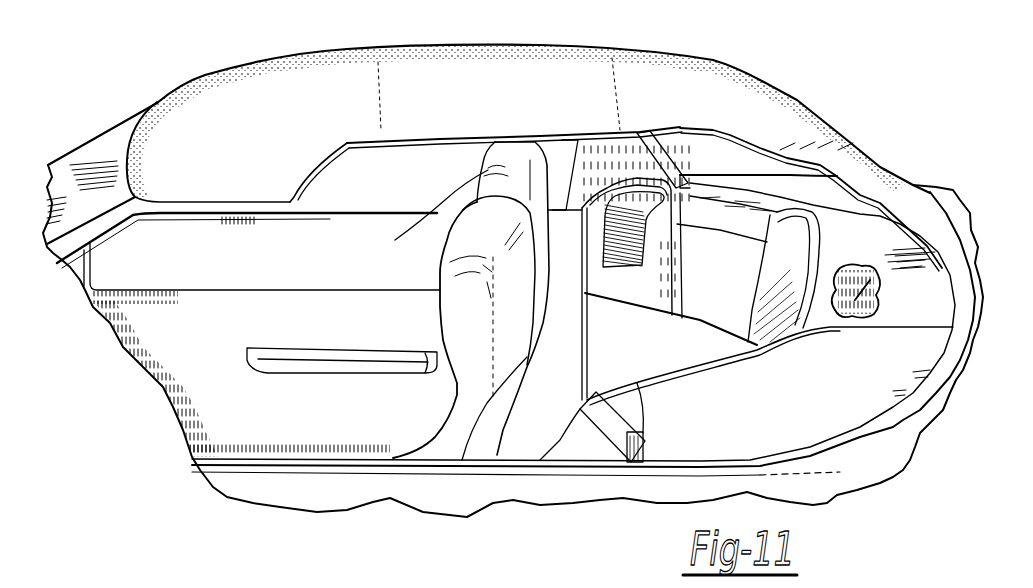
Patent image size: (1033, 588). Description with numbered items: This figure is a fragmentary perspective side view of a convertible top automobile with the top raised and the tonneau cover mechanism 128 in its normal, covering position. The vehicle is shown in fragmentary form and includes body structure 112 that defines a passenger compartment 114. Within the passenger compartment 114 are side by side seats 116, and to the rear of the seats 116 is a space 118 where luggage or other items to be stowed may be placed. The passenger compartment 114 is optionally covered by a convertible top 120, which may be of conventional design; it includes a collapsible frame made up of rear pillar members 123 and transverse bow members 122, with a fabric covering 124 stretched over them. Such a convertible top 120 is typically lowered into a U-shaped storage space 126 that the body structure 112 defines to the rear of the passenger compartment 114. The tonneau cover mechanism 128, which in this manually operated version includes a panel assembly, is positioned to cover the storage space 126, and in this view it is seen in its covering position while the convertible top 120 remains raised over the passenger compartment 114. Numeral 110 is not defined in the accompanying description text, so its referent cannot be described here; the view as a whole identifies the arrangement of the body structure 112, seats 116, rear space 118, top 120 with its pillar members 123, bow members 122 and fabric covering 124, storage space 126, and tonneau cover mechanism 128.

The vehicle body 110 is at (189, 460).
The body structure 112 is at (360, 507).
The passenger compartment 114 is at (313, 329).
The seats 116 is at (456, 257).
The space 118 is at (648, 350).
The convertible top 120 is at (487, 63).
The transverse bow members 122 is at (343, 150).
The rear pillar members 123 is at (763, 147).
The fabric covering 124 is at (265, 115).
The storage space 126 is at (882, 288).
The tonneau cover mechanism 128 is at (886, 312).